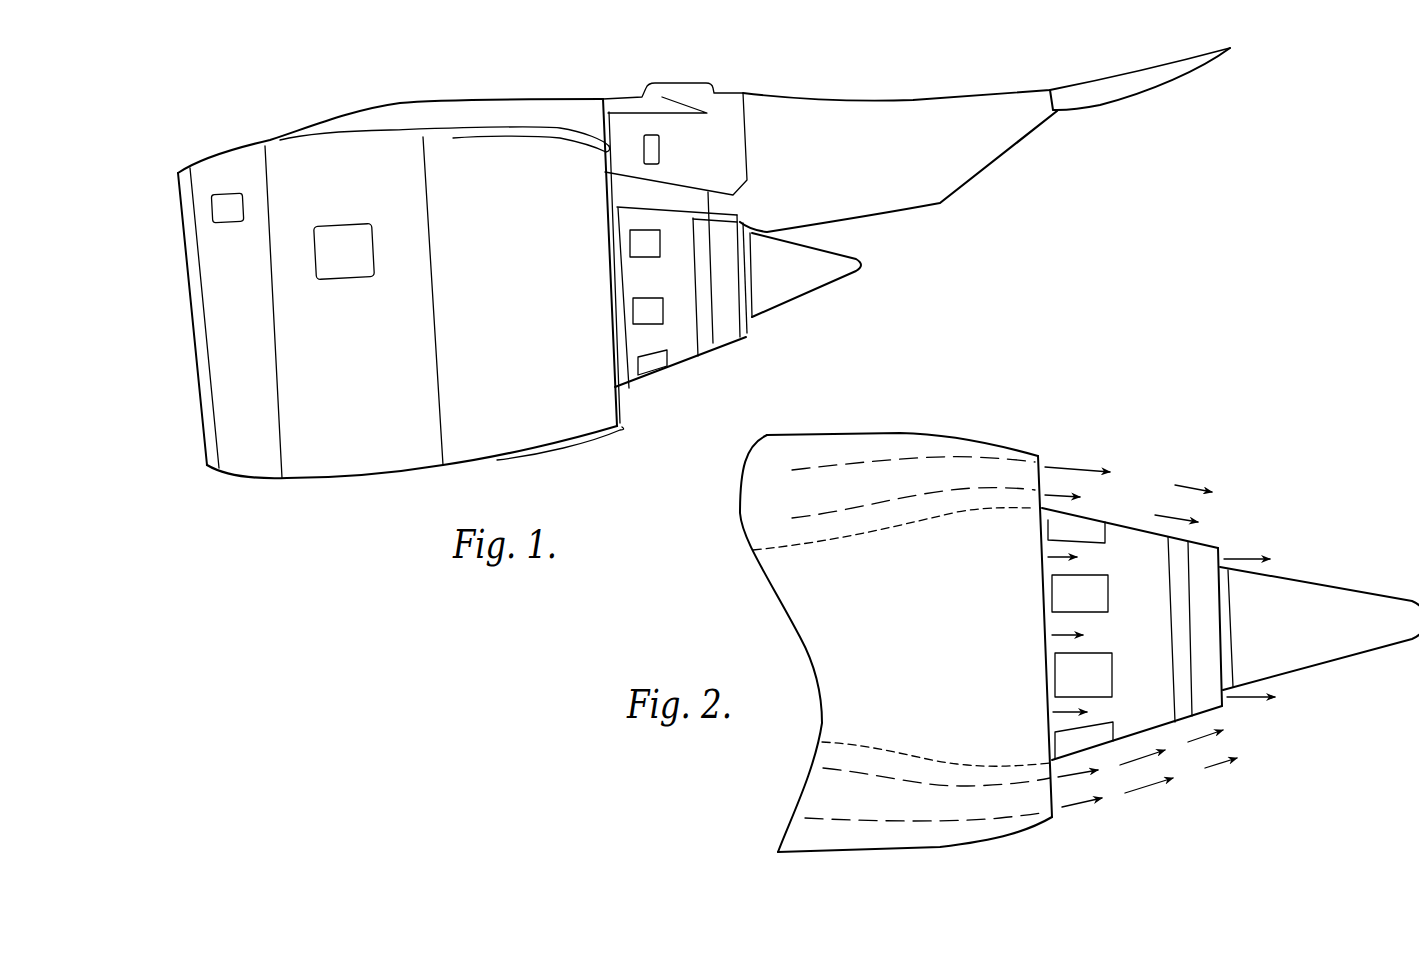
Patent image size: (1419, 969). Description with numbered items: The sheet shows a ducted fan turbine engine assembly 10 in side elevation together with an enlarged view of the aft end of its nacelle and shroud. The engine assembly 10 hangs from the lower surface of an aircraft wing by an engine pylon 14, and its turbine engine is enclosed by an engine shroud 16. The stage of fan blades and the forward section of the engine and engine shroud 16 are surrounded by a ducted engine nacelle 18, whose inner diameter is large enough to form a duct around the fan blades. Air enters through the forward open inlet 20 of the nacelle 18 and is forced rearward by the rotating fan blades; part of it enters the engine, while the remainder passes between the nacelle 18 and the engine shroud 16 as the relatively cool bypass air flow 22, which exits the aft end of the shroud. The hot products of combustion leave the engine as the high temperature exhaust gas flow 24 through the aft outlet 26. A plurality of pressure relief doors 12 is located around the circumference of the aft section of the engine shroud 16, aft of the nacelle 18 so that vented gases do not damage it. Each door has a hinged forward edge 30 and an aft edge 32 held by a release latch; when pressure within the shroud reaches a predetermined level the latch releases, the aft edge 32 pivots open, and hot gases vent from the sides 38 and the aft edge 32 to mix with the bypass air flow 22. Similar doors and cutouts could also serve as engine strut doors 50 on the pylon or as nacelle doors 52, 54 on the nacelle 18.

In FIG. 1, the ducted fan turbine engine assembly 10 is at (335, 510).
In FIG. 1, the pressure relief doors 12 is at (650, 245).
In FIG. 2, the pressure relief doors 12 is at (1090, 527).
In FIG. 1, the engine pylon 14 is at (907, 135).
In FIG. 1, the engine shroud 16 is at (682, 355).
In FIG. 2, the engine shroud 16 is at (1165, 727).
In FIG. 1, the ducted engine nacelle 18 is at (243, 167).
In FIG. 2, the ducted engine nacelle 18 is at (997, 442).
In FIG. 1, the forward open inlet 20 is at (183, 352).
In FIG. 2, the forward open inlet 20 is at (897, 832).
In FIG. 2, the bypass air flow 22 is at (902, 462).
In FIG. 2, the high temperature exhaust gas flow 24 is at (1248, 557).
In FIG. 1, the outlet 26 is at (757, 330).
In FIG. 2, the outlet 26 is at (1228, 552).
In FIG. 2, the forward edge 30 is at (1050, 590).
In FIG. 2, the aft edge 32 is at (1098, 585).
In FIG. 2, the sides 38 is at (1043, 555).
In FIG. 1, the engine strut doors 50 is at (643, 150).
In FIG. 1, the nacelle door 52 is at (223, 205).
In FIG. 1, the nacelle door 54 is at (328, 248).